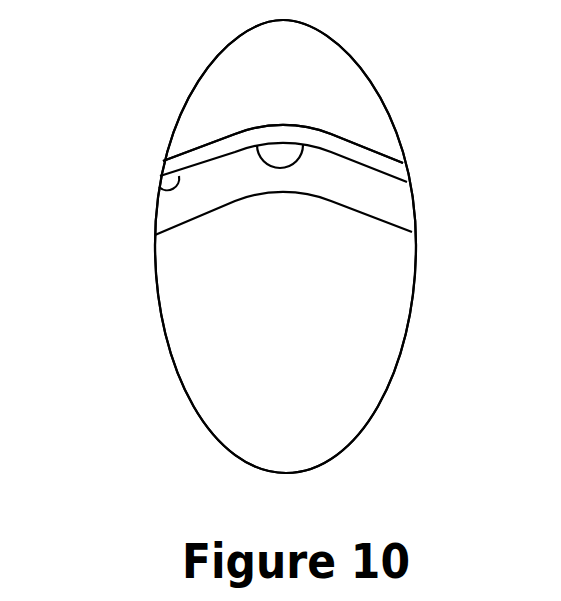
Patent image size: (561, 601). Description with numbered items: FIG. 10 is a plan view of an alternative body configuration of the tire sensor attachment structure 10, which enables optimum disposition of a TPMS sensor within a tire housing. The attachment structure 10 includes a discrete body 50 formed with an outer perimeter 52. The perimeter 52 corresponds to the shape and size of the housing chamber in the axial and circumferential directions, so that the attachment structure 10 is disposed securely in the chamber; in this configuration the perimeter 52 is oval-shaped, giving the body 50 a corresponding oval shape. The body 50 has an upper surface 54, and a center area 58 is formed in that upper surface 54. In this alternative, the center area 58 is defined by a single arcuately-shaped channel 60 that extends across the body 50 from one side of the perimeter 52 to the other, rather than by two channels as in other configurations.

The tire sensor attachment structure 10 is at (399, 417).
The body 50 is at (385, 79).
The outer perimeter 52 is at (396, 134).
The upper surface 54 is at (183, 131).
The center area 58 is at (382, 278).
The channel 60 is at (158, 190).